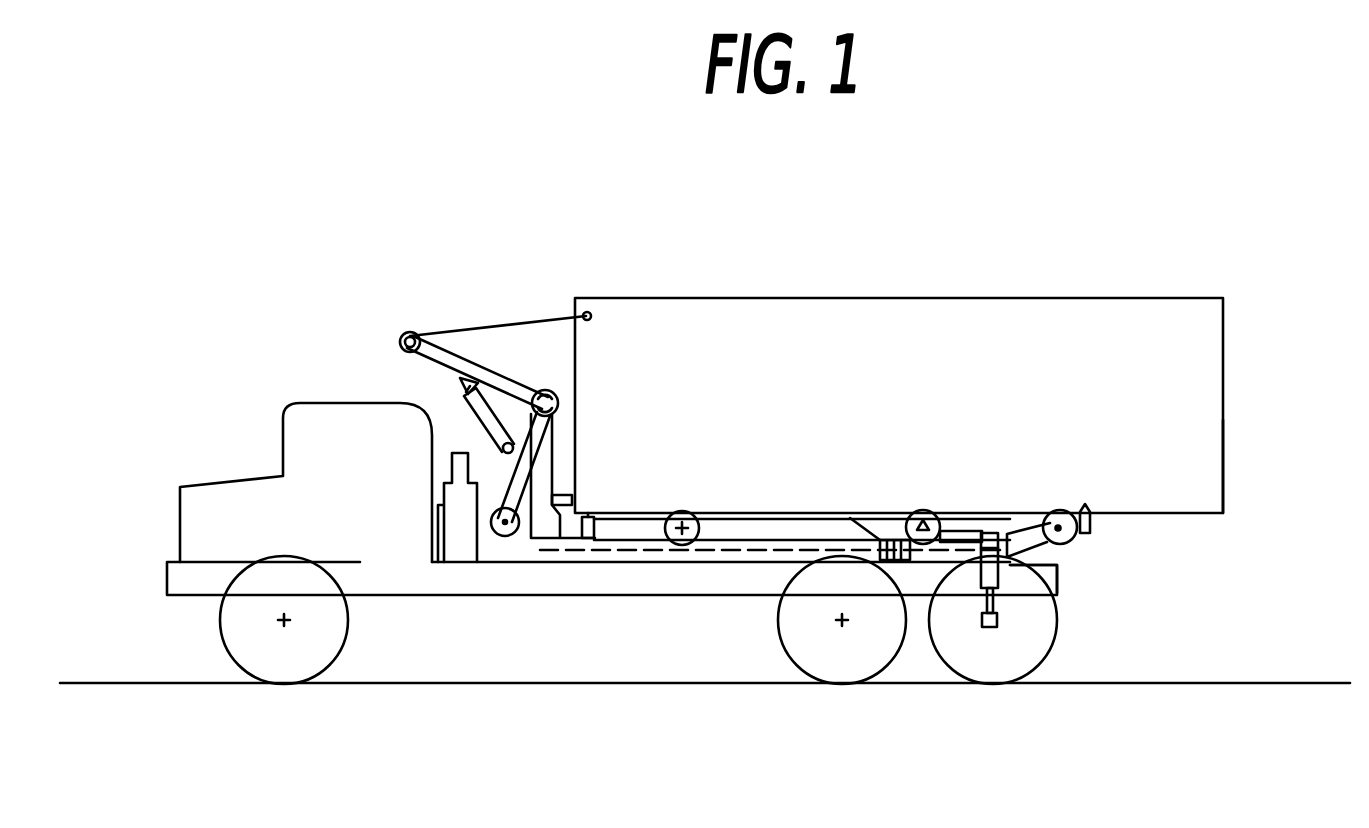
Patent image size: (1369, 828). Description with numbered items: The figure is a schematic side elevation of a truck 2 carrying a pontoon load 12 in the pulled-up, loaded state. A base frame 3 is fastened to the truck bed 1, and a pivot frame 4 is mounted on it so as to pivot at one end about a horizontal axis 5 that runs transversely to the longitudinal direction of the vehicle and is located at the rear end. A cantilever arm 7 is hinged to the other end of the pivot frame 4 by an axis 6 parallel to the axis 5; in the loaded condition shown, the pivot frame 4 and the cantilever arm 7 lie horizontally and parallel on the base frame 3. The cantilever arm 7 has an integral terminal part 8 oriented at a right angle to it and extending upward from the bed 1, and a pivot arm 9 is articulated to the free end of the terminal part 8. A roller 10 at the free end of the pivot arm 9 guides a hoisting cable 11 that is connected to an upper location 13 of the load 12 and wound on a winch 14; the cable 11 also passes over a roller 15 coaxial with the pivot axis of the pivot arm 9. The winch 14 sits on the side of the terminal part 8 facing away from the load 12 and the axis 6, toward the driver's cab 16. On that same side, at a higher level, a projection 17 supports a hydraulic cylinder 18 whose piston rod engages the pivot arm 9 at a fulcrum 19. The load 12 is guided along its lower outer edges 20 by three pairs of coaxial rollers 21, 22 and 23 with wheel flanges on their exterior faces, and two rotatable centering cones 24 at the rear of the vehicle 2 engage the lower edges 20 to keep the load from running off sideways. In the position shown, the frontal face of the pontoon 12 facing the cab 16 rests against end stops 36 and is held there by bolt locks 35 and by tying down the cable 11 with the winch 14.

The truck bed 1 is at (717, 582).
The truck 2 is at (401, 597).
The base frame 3 is at (625, 557).
The pivot frame 4 is at (964, 530).
The horizontal axis 5 is at (1008, 536).
The axis 6 is at (879, 538).
The cantilever arm 7 is at (747, 528).
The terminal part 8 is at (538, 480).
The pivot arm 9 is at (502, 388).
The roller 10 is at (404, 332).
The hoisting cable 11 is at (522, 323).
The load 12 is at (925, 315).
The upper location 13 is at (589, 311).
The winch 14 is at (505, 523).
The roller 15 is at (559, 402).
The driver's cab 16 is at (310, 467).
The projection 17 is at (521, 438).
The hydraulic cylinder 18 is at (483, 417).
The fulcrum 19 is at (468, 386).
The lower outer edges 20 is at (1172, 515).
The rollers 21 is at (683, 510).
The rollers 22 is at (925, 545).
The rollers 23 is at (1072, 540).
The centering cones 24 is at (1088, 510).
The bolt locks 35 is at (590, 528).
The end stops 36 is at (555, 503).